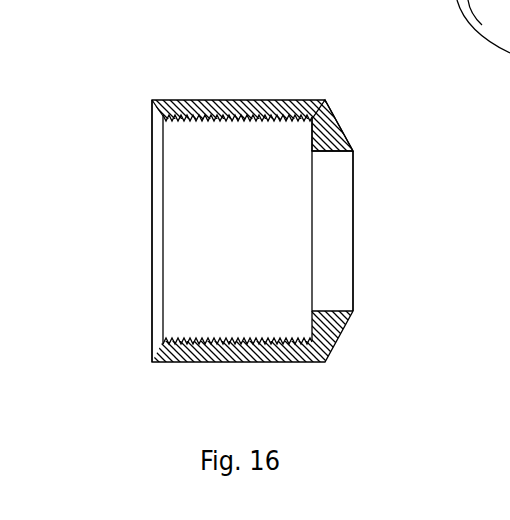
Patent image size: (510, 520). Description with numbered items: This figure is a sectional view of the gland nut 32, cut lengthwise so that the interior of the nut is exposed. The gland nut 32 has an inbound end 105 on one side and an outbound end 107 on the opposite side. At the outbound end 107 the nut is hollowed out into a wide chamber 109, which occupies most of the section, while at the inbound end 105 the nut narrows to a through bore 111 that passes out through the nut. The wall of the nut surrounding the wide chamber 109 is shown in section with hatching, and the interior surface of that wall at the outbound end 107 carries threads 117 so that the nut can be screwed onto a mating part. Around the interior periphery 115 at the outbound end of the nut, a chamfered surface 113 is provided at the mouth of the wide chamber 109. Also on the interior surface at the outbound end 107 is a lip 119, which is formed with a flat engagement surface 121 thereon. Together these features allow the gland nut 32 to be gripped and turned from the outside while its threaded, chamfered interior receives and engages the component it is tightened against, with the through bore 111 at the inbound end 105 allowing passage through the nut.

The gland nut 32 is at (92, 96).
The inbound end 105 is at (353, 230).
The outbound end 107 is at (152, 225).
The wide chamber 109 is at (252, 240).
The through bore 111 is at (334, 282).
The chamfered surface 113 is at (152, 112).
The interior periphery 115 is at (163, 298).
The threads 117 is at (235, 121).
The lip 119 is at (338, 137).
The flat engagement surface 121 is at (312, 323).